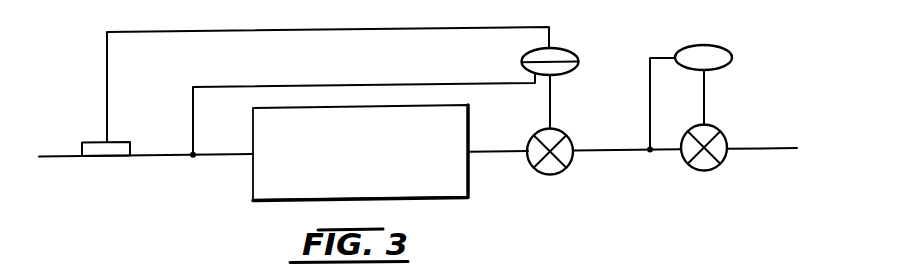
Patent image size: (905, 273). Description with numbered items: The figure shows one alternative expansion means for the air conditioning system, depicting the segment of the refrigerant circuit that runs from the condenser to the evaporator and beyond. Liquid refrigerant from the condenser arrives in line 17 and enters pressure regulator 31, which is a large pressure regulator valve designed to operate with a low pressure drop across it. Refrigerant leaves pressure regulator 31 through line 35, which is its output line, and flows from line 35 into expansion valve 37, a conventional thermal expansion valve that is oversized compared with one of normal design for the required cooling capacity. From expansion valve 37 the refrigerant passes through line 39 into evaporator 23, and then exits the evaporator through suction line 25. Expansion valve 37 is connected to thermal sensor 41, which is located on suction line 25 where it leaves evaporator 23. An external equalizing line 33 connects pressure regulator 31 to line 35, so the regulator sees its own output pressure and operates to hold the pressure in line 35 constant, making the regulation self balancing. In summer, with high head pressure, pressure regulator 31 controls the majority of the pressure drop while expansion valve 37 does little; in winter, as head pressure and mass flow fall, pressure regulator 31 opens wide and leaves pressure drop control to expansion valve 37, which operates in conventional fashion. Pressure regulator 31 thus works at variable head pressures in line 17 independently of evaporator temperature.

The line 17 is at (763, 149).
The evaporator 23 is at (273, 200).
The suction line 25 is at (63, 158).
The pressure regulator 31 is at (705, 108).
The equalizing line 33 is at (650, 96).
The line 35 is at (620, 151).
The expansion valve 37 is at (555, 175).
The line 39 is at (492, 152).
The thermal sensor 41 is at (97, 142).